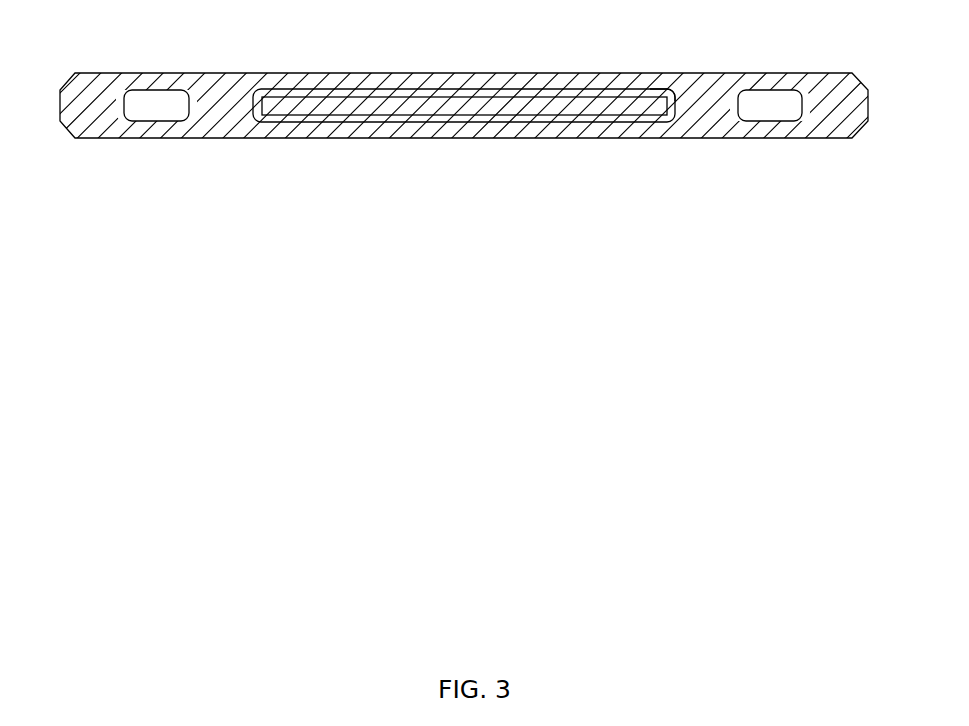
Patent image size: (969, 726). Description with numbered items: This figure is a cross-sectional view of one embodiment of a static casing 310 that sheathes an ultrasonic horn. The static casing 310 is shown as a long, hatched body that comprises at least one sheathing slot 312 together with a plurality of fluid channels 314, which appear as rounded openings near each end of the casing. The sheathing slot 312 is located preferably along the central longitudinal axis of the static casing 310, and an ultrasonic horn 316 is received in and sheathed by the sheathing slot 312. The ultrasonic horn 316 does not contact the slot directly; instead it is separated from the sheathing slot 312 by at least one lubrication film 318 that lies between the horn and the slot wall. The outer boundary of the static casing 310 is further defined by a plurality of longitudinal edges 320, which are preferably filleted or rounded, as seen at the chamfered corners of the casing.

The static casing 310 is at (475, 202).
The sheathing slot 312 is at (466, 74).
The fluid channels 314 is at (771, 103).
The ultrasonic horn 316 is at (333, 104).
The lubrication film 318 is at (657, 93).
The longitudinal edges 320 is at (869, 90).